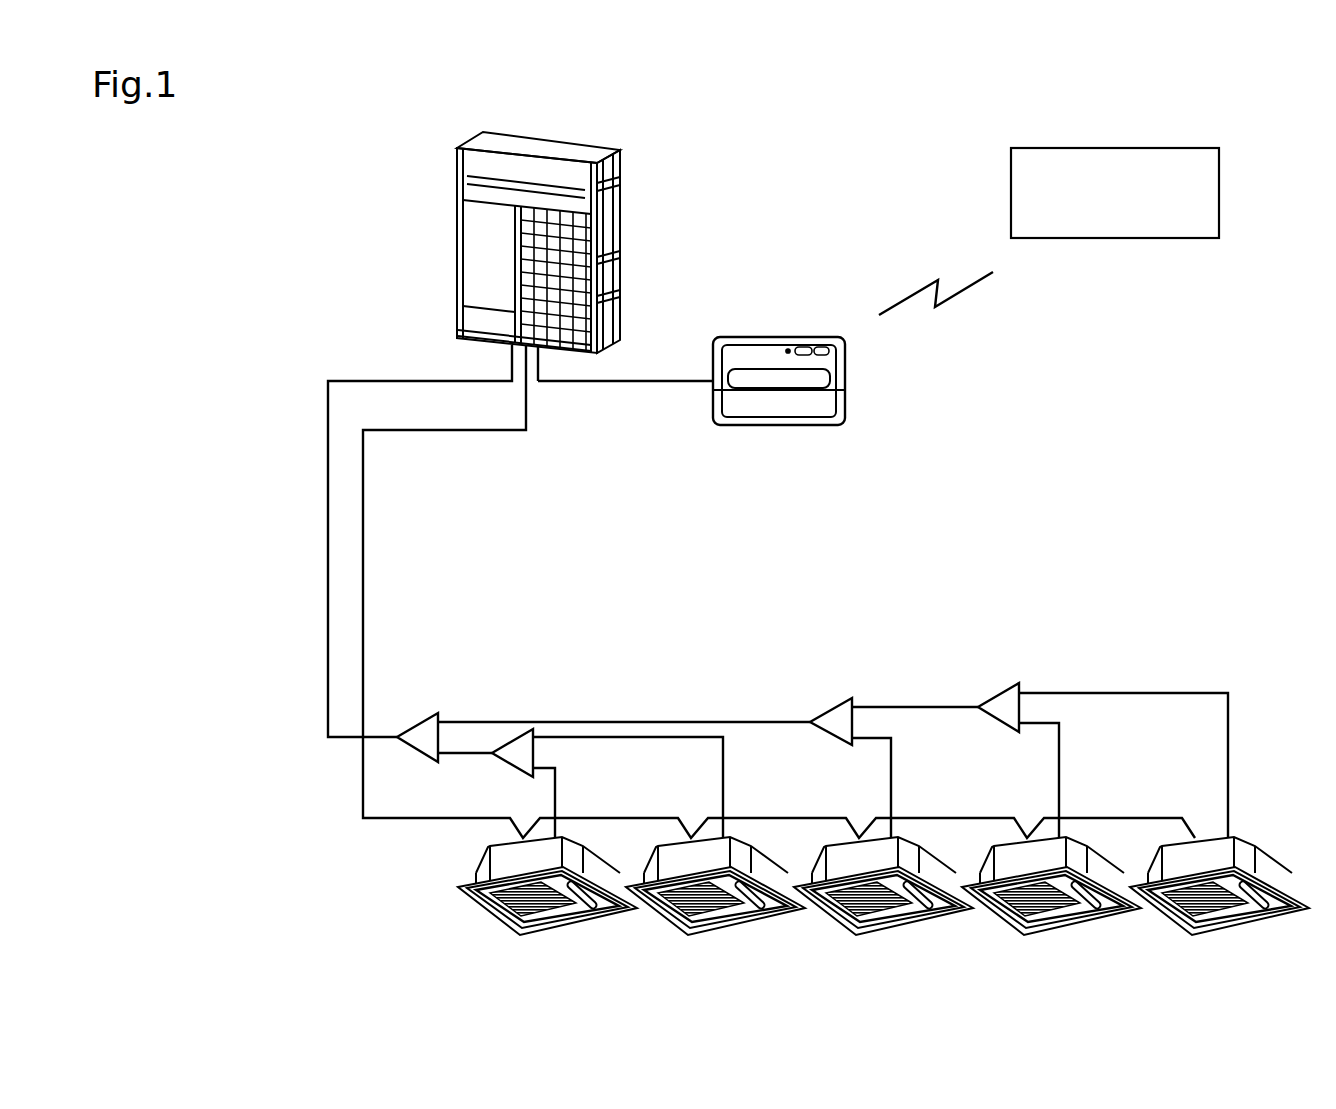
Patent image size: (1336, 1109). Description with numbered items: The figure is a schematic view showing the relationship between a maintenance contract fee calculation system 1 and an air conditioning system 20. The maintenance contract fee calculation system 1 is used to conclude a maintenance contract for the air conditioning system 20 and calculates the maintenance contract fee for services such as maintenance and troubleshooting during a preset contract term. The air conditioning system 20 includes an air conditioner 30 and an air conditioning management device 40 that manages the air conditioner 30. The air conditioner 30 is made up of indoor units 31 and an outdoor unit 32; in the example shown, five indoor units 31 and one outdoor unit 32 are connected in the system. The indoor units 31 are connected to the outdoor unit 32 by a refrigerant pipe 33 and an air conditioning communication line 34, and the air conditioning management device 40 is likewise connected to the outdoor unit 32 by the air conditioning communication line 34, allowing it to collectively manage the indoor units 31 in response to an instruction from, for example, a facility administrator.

The maintenance contract fee calculation system 1 is at (1219, 190).
The air conditioning system 20 is at (815, 207).
The air conditioner 30 is at (290, 240).
The indoor unit 31 is at (577, 928).
The outdoor unit 32 is at (620, 188).
The refrigerant pipe 33 is at (327, 559).
The air conditioning communication line 34 is at (363, 625).
The air conditioning management device 40 is at (779, 337).